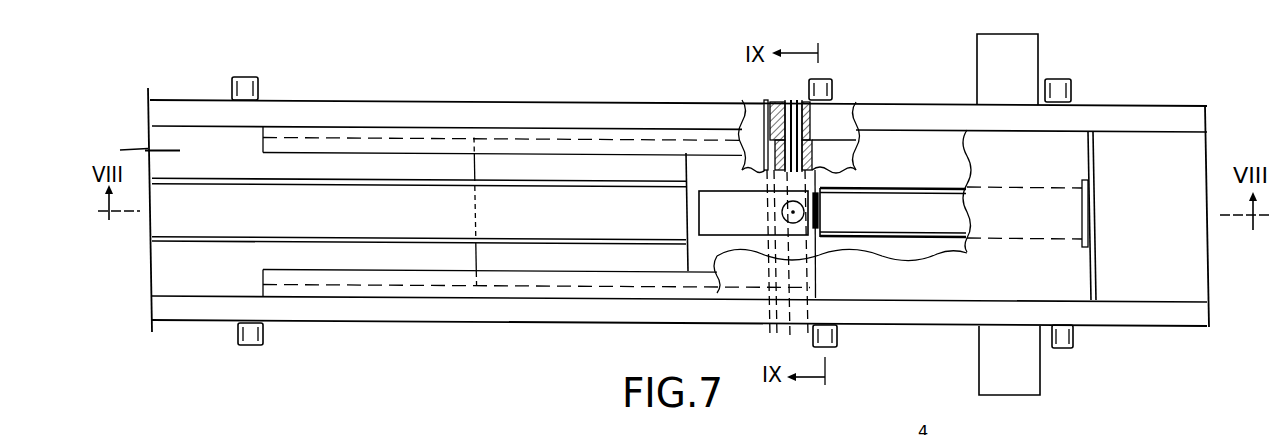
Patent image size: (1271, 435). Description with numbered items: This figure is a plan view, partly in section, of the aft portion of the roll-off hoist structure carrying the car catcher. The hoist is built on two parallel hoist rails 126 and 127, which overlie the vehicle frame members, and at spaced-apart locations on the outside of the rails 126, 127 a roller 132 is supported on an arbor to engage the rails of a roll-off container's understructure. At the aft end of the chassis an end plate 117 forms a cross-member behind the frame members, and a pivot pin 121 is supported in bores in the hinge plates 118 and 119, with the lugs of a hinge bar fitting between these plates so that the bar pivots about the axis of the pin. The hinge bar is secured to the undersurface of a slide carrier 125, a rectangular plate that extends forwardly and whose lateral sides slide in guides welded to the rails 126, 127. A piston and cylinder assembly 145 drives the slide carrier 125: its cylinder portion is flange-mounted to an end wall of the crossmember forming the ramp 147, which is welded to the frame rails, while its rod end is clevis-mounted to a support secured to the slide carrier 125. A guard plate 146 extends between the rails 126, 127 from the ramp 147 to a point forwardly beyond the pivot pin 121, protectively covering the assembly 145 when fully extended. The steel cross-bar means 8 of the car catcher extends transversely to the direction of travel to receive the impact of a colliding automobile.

The cross-bar means 8 is at (995, 40).
The end plate 117 is at (776, 325).
The hinge plate 118 is at (780, 322).
The hinge plate 119 is at (777, 100).
The pivot pin 121 is at (812, 117).
The slide carrier 125 is at (474, 167).
The hoist rail 126 is at (465, 324).
The hoist rail 127 is at (428, 98).
The roller 132 is at (250, 76).
The piston and cylinder assembly 145 is at (915, 186).
The guard plate 146 is at (1052, 170).
The ramp 147 is at (1168, 270).